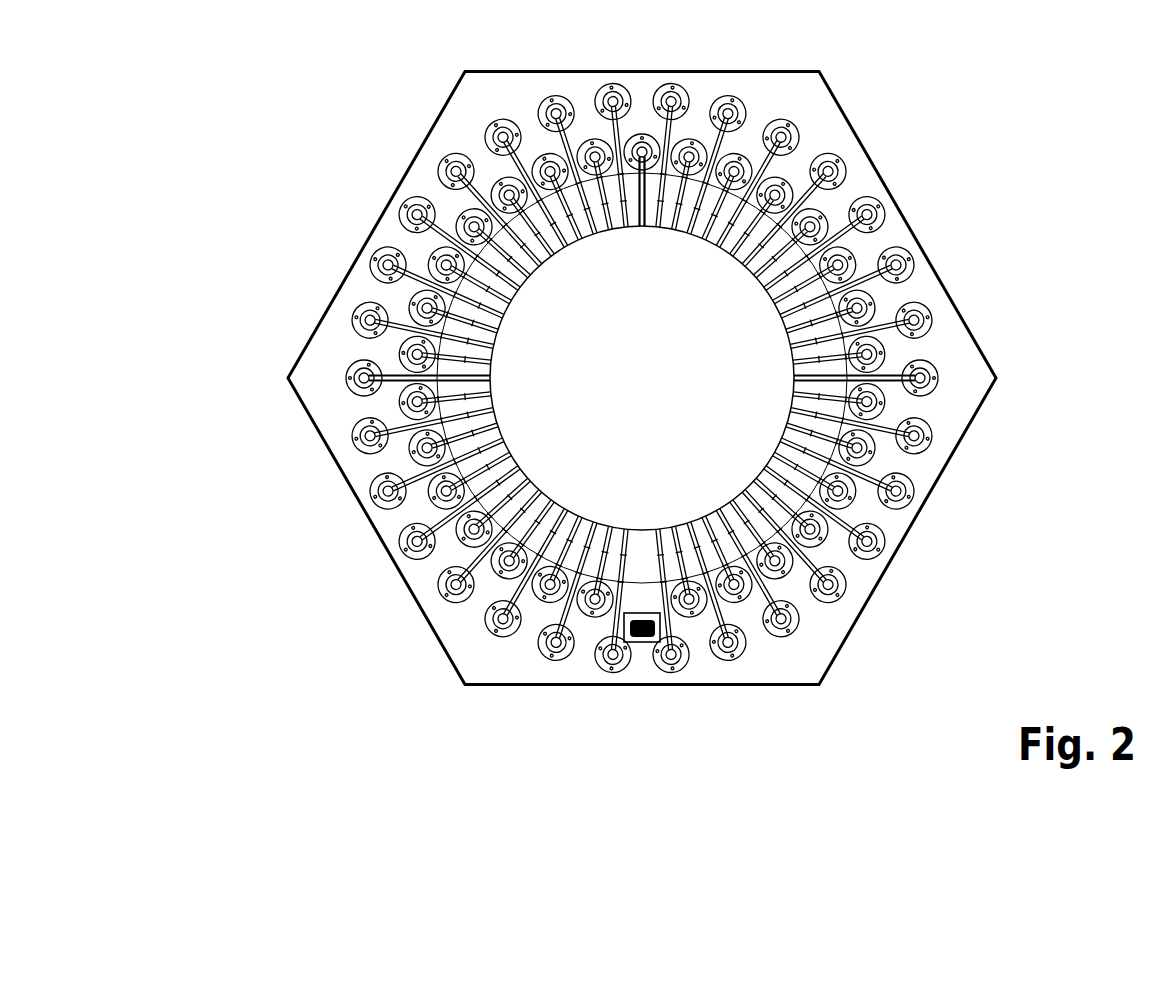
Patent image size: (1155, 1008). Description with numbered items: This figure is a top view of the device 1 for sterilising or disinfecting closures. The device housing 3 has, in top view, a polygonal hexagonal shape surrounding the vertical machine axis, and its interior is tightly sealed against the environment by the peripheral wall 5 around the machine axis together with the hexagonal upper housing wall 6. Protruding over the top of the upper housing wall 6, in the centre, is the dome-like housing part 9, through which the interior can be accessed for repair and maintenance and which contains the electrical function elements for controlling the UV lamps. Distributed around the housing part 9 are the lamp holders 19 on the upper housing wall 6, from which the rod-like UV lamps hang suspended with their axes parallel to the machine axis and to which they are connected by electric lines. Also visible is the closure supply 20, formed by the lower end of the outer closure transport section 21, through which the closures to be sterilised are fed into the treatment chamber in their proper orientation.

The device 1 is at (320, 143).
The device housing 3 is at (325, 465).
The peripheral wall 5 is at (952, 288).
The upper housing wall 6 is at (961, 390).
The housing part 9 is at (648, 392).
The lamp holders 19 is at (845, 163).
The closure supply 20 is at (642, 627).
The outer closure transport section 21 is at (642, 628).